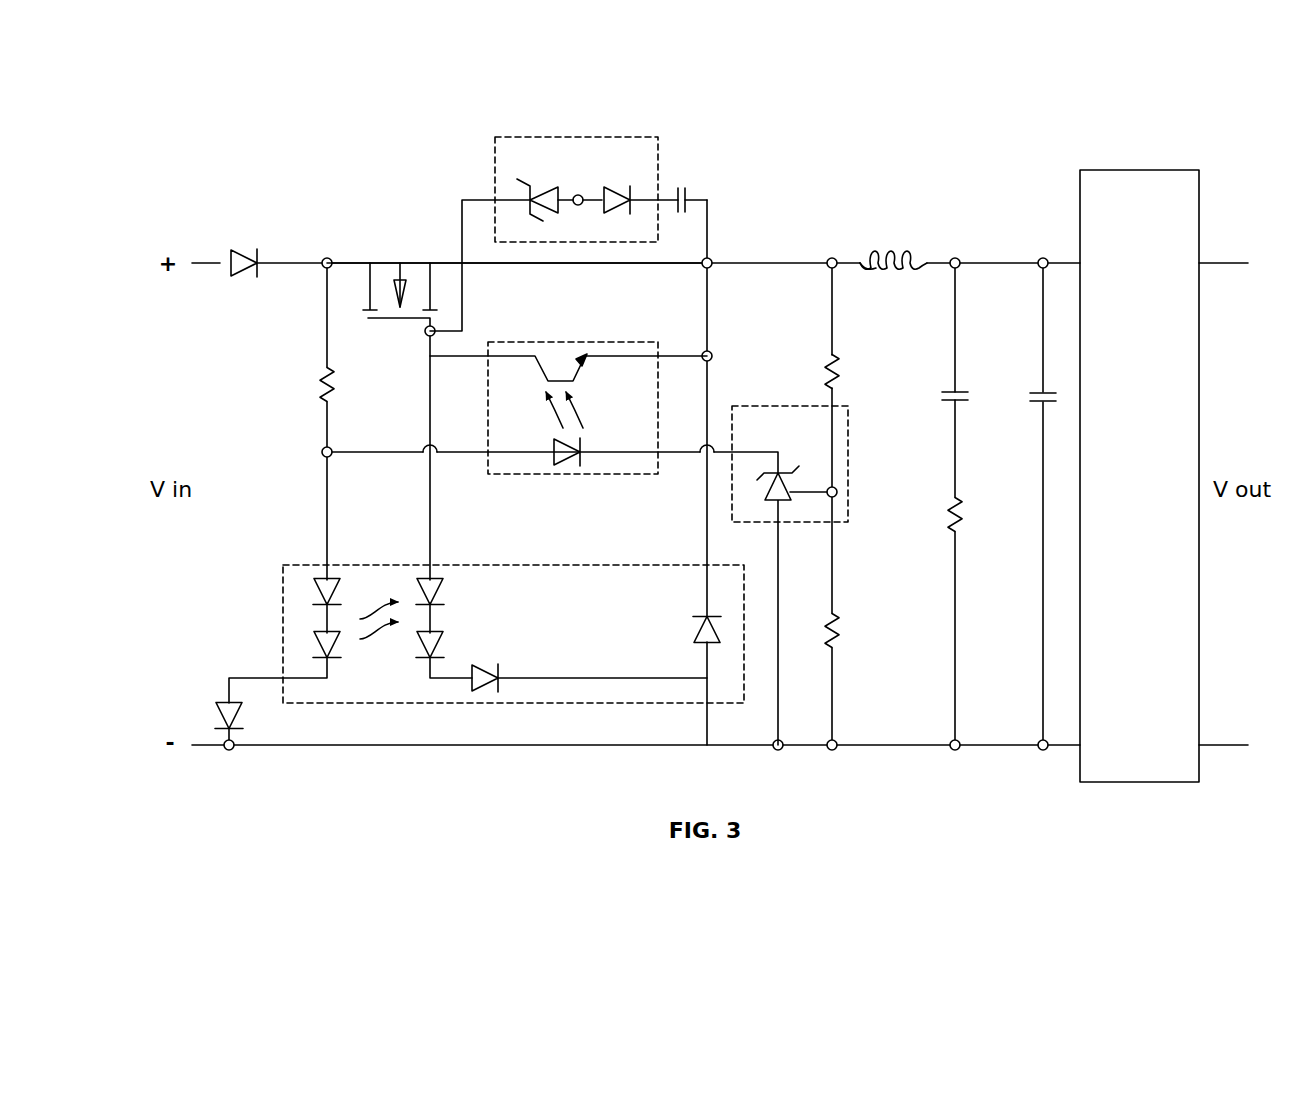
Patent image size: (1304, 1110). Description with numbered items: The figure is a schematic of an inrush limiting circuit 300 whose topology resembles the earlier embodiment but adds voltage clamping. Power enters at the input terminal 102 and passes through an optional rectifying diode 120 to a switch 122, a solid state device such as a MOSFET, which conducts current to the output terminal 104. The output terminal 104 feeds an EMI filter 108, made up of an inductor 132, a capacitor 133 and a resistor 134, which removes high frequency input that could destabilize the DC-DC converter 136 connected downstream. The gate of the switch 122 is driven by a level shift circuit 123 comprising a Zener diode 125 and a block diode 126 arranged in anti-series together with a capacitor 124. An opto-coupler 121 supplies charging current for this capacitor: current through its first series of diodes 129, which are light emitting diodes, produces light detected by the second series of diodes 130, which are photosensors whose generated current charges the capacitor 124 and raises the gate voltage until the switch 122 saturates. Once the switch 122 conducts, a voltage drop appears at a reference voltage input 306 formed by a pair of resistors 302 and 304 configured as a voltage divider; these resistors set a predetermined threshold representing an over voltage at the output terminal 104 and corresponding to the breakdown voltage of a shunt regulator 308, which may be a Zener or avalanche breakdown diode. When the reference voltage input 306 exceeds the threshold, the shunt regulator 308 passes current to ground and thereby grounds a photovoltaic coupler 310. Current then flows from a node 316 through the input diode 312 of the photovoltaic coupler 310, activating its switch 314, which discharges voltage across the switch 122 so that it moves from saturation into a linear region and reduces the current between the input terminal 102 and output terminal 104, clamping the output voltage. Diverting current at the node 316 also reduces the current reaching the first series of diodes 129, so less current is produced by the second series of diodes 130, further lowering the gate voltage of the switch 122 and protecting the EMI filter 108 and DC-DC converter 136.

The inrush limiting circuit 300 is at (292, 112).
The input terminal 102 is at (323, 258).
The output terminal 104 is at (548, 265).
The EMI filter 108 is at (887, 243).
The rectifying diode 120 is at (243, 258).
The opto-coupler 121 is at (427, 718).
The switch 122 is at (383, 226).
The level shift circuit 123 is at (607, 115).
The capacitor 124 is at (681, 190).
The Zener diode 125 is at (548, 192).
The block diode 126 is at (620, 222).
The first series of diodes 129 is at (300, 617).
The second series of diodes 130 is at (502, 618).
The inductor 132 is at (885, 272).
The capacitor 133 is at (940, 398).
The resistor 134 is at (945, 520).
The DC-DC converter 136 is at (1139, 782).
The resistor 302 is at (832, 360).
The resistor 304 is at (843, 625).
The reference voltage input 306 is at (838, 491).
The shunt regulator 308 is at (790, 522).
The photovoltaic coupler 310 is at (618, 475).
The input diode 312 is at (562, 460).
The switch 314 is at (538, 370).
The node 316 is at (322, 450).